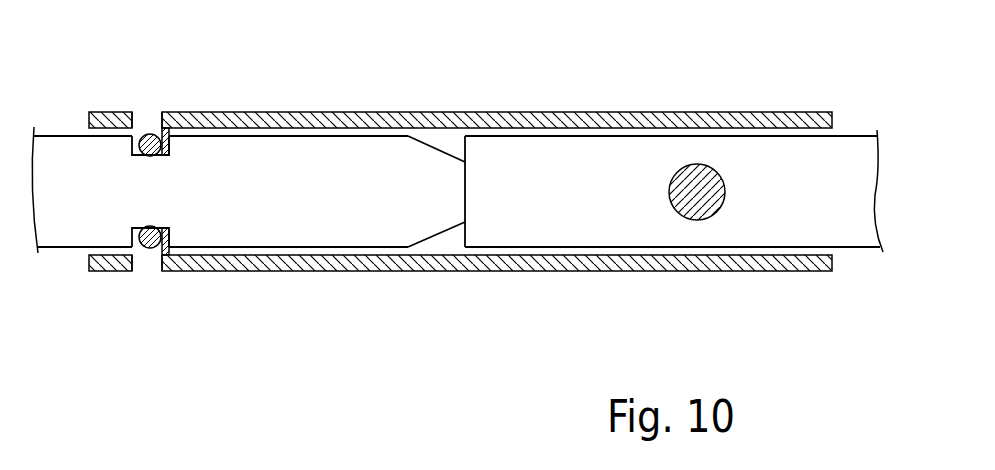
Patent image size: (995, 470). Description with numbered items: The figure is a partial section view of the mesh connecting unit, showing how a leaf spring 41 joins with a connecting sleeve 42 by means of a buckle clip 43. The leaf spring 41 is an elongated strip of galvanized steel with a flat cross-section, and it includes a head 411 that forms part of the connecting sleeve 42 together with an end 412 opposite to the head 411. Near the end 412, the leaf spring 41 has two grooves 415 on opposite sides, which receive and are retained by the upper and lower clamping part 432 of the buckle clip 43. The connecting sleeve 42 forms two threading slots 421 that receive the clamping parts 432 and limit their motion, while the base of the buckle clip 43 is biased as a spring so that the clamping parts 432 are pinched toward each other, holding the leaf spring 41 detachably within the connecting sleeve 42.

The leaf spring 41 is at (60, 135).
The connecting sleeve 42 is at (342, 112).
The buckle clip 43 is at (149, 249).
The head 411 is at (469, 190).
The end 412 is at (463, 190).
The grooves 415 is at (140, 137).
The threading slots 421 is at (152, 118).
The clamping part 432 is at (166, 137).